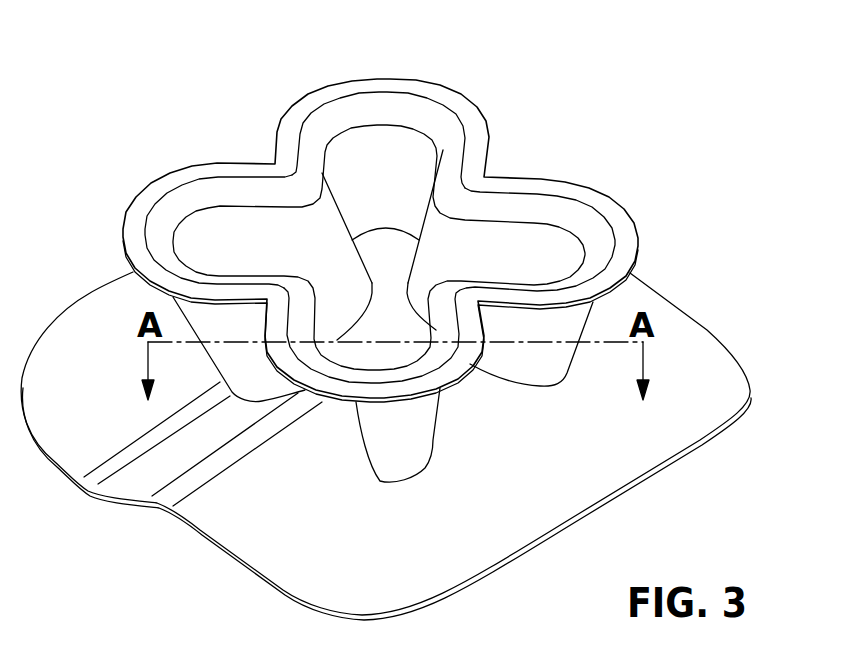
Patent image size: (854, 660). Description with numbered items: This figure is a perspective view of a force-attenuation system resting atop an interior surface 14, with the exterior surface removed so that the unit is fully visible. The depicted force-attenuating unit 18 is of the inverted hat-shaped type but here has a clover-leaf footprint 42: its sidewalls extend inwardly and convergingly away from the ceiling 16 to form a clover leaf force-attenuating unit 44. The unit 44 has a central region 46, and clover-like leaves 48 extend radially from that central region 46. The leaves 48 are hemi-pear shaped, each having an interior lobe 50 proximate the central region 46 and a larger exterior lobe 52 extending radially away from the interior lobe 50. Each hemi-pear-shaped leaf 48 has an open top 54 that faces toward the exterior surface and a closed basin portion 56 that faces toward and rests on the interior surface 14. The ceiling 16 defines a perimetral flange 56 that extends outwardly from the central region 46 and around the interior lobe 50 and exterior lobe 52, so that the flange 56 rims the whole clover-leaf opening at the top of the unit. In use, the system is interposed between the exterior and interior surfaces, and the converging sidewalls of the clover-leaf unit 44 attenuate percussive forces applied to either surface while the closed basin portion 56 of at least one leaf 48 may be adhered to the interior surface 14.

The interior surface 14 is at (597, 470).
The ceiling 16 is at (415, 210).
The force-attenuating unit 18 is at (398, 330).
The clover-leaf footprint 42 is at (410, 110).
The clover leaf force-attenuating unit 44 is at (375, 457).
The central region 46 is at (385, 178).
The clover-like leaf 48 is at (207, 227).
The interior lobe 50 is at (498, 212).
The exterior lobe 52 is at (610, 227).
The open top 54 is at (333, 349).
The perimetral flange 56 is at (340, 400).